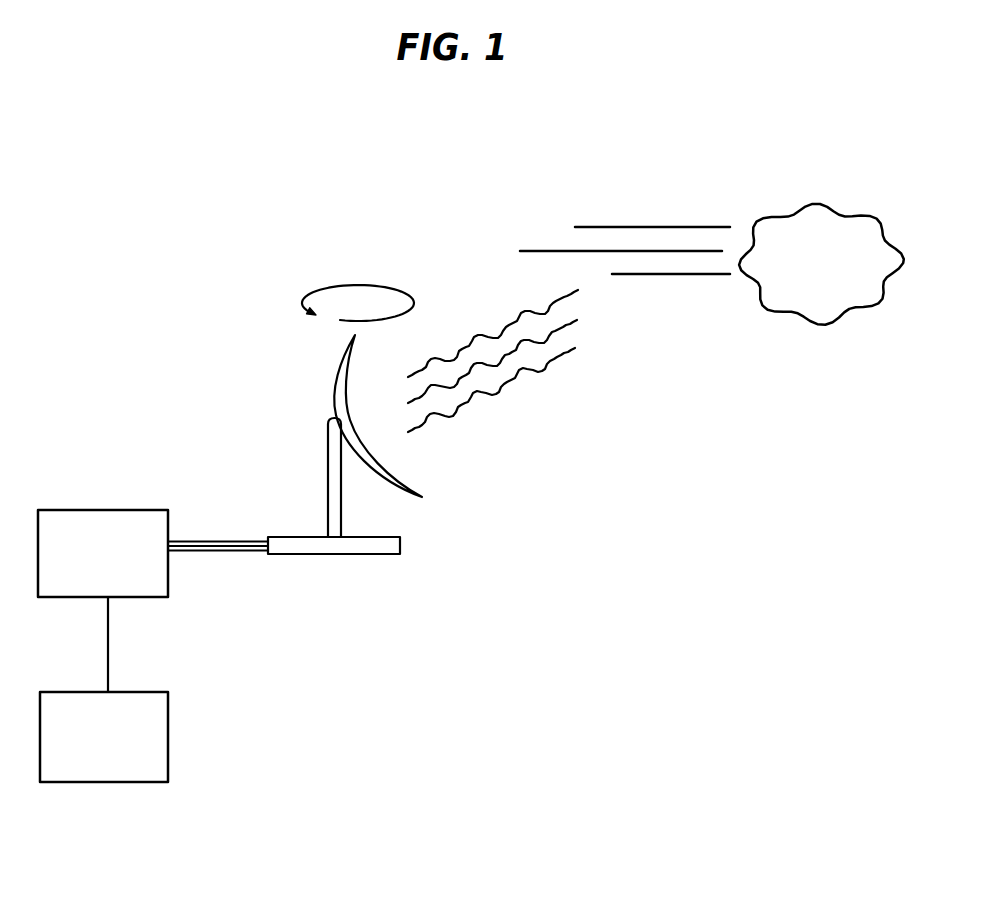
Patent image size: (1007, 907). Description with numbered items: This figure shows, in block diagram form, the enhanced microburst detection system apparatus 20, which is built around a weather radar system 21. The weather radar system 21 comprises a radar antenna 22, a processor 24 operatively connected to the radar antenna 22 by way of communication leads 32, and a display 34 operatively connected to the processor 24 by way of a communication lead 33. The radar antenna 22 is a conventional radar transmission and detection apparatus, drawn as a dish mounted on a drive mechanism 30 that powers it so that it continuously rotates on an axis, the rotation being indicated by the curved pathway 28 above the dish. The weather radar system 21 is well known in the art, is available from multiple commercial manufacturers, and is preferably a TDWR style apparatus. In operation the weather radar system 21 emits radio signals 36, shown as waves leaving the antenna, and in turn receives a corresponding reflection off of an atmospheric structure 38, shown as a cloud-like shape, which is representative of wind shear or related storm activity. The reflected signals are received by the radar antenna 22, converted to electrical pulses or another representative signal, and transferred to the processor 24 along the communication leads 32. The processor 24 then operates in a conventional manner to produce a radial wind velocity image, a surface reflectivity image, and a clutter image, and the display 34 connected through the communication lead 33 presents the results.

The enhanced microburst detection system apparatus 20 is at (152, 337).
The weather radar system 21 is at (417, 524).
The radar antenna 22 is at (390, 480).
The processor 24 is at (70, 510).
The pathway 28 is at (395, 287).
The drive mechanism 30 is at (327, 464).
The communication leads 32 is at (218, 555).
The communication lead 33 is at (108, 636).
The display 34 is at (66, 691).
The radio signals 36 is at (518, 376).
The atmospheric structure 38 is at (690, 226).